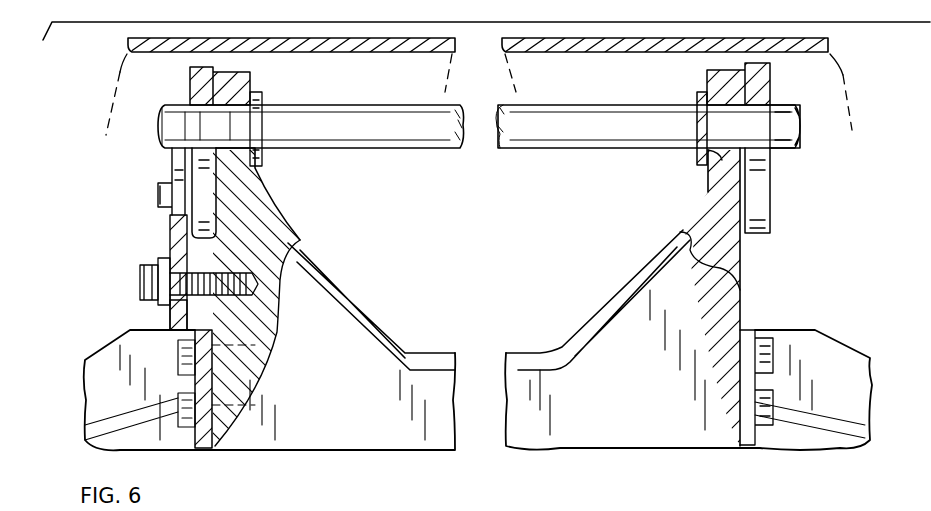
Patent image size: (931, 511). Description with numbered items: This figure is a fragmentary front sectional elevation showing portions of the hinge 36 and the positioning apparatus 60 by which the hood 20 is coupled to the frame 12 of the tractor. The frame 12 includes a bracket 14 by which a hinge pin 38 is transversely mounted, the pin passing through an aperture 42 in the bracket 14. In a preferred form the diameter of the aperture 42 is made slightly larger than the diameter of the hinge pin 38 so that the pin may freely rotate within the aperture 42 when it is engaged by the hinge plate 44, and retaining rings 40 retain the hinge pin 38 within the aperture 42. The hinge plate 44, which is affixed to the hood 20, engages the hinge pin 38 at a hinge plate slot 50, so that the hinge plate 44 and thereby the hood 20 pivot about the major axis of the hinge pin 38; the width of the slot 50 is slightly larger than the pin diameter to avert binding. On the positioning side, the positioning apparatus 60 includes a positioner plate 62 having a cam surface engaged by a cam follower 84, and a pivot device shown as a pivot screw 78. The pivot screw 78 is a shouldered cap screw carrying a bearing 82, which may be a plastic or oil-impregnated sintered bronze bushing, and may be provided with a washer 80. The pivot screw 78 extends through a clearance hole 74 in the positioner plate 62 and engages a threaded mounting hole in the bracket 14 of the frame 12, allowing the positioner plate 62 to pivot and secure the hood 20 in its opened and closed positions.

The frame 12 is at (860, 320).
The bracket 14 is at (620, 290).
The hood 20 is at (338, 53).
The hinge 36 is at (817, 98).
The hinge pin 38 is at (533, 105).
The retaining rings 40 is at (699, 93).
The aperture 42 is at (740, 148).
The hinge plate 44 is at (770, 192).
The hinge plate slot 50 is at (752, 107).
The positioning apparatus 60 is at (134, 230).
The positioner plate 62 is at (170, 155).
The clearance hole 74 is at (158, 278).
The pivot screw 78 is at (152, 287).
The washer 80 is at (172, 303).
The bearing 82 is at (190, 326).
The cam follower 84 is at (158, 194).